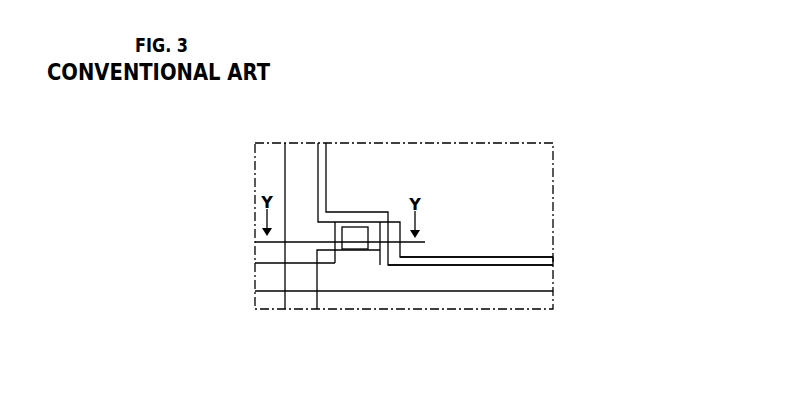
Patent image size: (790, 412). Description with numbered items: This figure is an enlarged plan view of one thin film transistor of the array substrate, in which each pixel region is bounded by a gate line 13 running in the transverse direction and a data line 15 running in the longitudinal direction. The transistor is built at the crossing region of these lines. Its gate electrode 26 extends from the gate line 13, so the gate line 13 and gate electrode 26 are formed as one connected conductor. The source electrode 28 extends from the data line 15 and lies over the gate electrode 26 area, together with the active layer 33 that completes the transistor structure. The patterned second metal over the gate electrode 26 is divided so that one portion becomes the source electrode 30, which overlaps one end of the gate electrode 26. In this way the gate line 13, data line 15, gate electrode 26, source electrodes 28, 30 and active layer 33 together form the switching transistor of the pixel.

The gate line 13 is at (523, 283).
The data line 15 is at (290, 157).
The gate electrode 26 is at (355, 222).
The source electrode 28 is at (322, 226).
The source electrode 30 is at (400, 252).
The active layer 33 is at (358, 245).